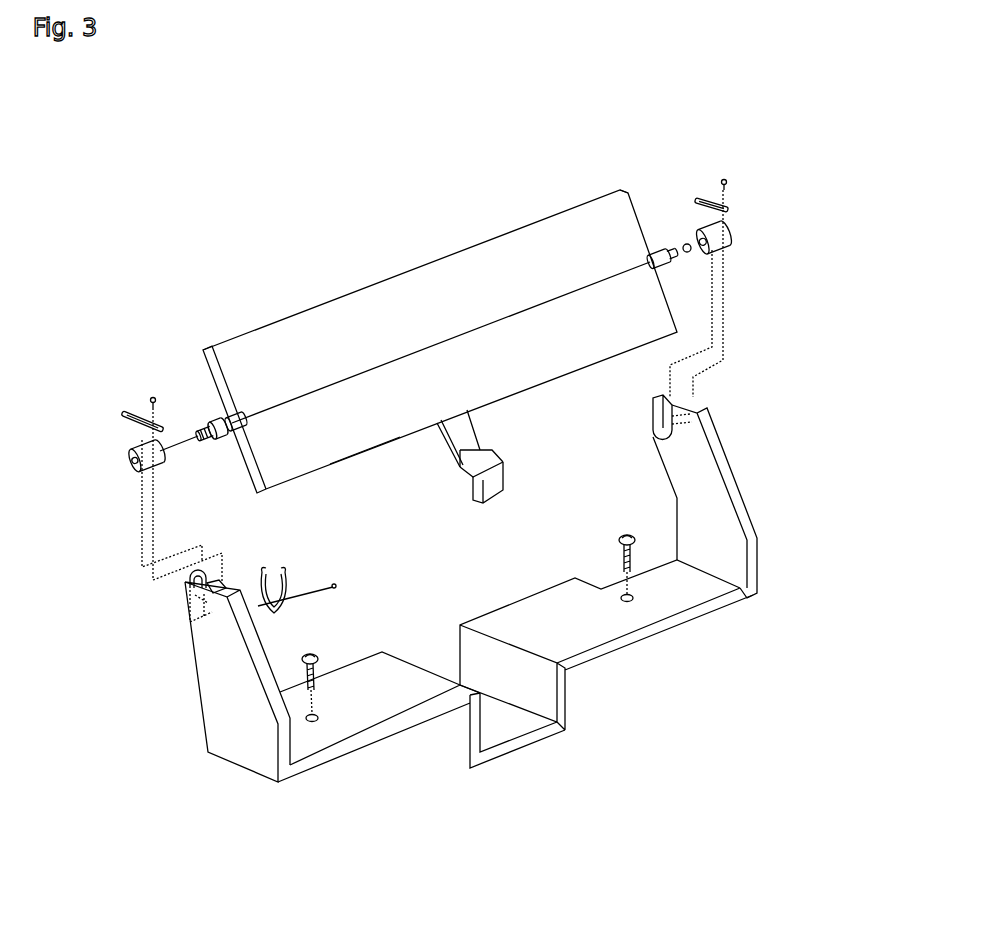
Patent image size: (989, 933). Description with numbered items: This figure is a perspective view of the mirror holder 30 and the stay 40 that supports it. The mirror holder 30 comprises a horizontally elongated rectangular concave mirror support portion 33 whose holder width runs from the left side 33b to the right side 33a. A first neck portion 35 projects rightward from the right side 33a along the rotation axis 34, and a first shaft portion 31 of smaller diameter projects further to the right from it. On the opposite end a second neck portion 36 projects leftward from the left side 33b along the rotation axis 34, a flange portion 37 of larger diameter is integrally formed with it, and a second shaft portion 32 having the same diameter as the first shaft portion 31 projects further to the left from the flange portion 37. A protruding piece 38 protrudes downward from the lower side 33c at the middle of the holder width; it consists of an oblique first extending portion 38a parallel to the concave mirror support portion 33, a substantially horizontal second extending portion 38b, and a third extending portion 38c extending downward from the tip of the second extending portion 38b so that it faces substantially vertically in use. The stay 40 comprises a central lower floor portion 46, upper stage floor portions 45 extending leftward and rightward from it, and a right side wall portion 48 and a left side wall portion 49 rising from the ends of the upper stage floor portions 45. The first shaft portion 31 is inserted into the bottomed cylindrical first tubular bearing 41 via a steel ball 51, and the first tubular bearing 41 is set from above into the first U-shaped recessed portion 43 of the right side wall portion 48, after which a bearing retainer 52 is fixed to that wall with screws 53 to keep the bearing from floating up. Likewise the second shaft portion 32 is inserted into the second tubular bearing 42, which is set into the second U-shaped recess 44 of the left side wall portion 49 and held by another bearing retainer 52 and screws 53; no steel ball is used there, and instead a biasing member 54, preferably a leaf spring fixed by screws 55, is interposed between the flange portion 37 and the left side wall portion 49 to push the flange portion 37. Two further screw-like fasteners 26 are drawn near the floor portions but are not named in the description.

The screw 26 is at (312, 656).
The mirror holder 30 is at (396, 270).
The first shaft portion 31 is at (673, 249).
The second shaft portion 32 is at (210, 424).
The concave mirror support portion 33 is at (446, 285).
The right side 33a is at (627, 196).
The left side 33b is at (206, 355).
The lower side 33c is at (352, 456).
The rotation axis 34 is at (436, 344).
The first neck portion 35 is at (652, 250).
The second neck portion 36 is at (233, 434).
The flange portion 37 is at (214, 438).
The protruding piece 38 is at (458, 484).
The first extending portion 38a is at (472, 427).
The second extending portion 38b is at (502, 455).
The third extending portion 38c is at (506, 487).
The stay 40 is at (768, 508).
The first tubular bearing 41 is at (732, 233).
The second tubular bearing 42 is at (134, 456).
The first U-shaped recessed portion 43 is at (655, 420).
The second U-shaped recess 44 is at (188, 580).
The upper stage floor portion 45 is at (428, 682).
The lower floor portion 46 is at (518, 742).
The right side wall portion 48 is at (741, 468).
The left side wall portion 49 is at (216, 672).
The steel ball 51 is at (688, 253).
The bearing retainer 52 is at (700, 200).
The screws 53 is at (724, 179).
The biasing member 54 is at (286, 582).
The screws 55 is at (337, 585).